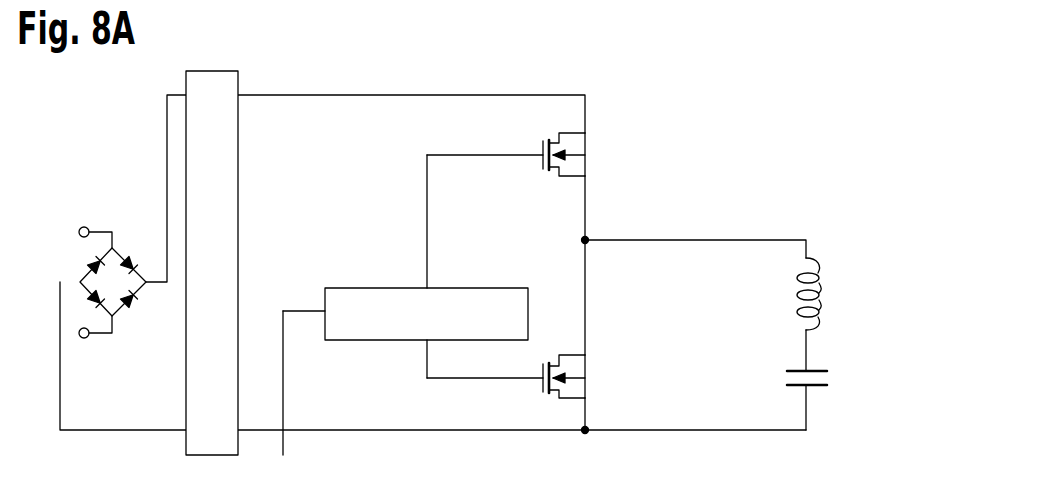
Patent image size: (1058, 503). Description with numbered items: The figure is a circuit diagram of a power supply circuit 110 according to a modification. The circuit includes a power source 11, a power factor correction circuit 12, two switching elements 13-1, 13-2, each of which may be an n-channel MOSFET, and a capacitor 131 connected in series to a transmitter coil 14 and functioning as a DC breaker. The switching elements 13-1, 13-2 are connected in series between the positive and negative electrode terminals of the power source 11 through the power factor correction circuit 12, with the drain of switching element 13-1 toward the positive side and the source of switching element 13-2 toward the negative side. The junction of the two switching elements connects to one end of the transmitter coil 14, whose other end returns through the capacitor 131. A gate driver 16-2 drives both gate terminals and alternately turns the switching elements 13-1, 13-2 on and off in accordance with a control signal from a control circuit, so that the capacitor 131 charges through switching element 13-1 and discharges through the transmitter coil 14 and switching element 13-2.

The power source 11 is at (124, 213).
The power factor correction circuit 12 is at (238, 214).
The switching element 13-1 is at (594, 157).
The switching element 13-2 is at (594, 380).
The transmitter coil 14 is at (832, 299).
The capacitor 131 is at (838, 383).
The gate driver 16-2 is at (364, 287).
The power supply circuit 110 is at (757, 170).